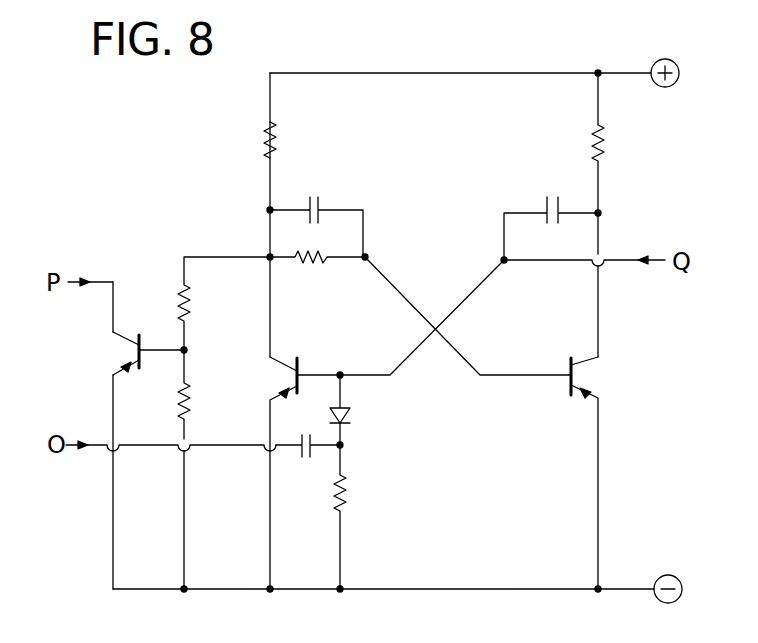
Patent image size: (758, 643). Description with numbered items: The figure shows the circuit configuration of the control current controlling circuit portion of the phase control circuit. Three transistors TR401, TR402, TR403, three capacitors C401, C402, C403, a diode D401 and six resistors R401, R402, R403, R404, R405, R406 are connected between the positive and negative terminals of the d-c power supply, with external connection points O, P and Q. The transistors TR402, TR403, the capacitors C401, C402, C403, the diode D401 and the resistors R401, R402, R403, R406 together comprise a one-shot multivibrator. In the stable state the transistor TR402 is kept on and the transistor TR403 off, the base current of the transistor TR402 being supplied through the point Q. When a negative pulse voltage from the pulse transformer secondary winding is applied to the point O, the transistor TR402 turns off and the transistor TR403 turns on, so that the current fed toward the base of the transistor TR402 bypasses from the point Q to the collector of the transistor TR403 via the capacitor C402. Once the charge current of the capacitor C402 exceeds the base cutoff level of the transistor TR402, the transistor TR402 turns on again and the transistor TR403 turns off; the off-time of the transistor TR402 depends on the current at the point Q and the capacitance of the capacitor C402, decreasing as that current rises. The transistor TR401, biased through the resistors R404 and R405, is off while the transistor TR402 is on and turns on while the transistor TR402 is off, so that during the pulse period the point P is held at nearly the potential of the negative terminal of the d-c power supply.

The resistor R401 is at (276, 141).
The resistor R402 is at (604, 148).
The resistor R403 is at (304, 265).
The resistor R404 is at (188, 306).
The resistor R405 is at (190, 398).
The resistor R406 is at (346, 492).
The capacitor C401 is at (320, 207).
The capacitor C402 is at (549, 196).
The capacitor C403 is at (308, 460).
The diode D401 is at (352, 413).
The transistor TR401 is at (132, 354).
The transistor TR402 is at (290, 378).
The transistor TR403 is at (585, 372).